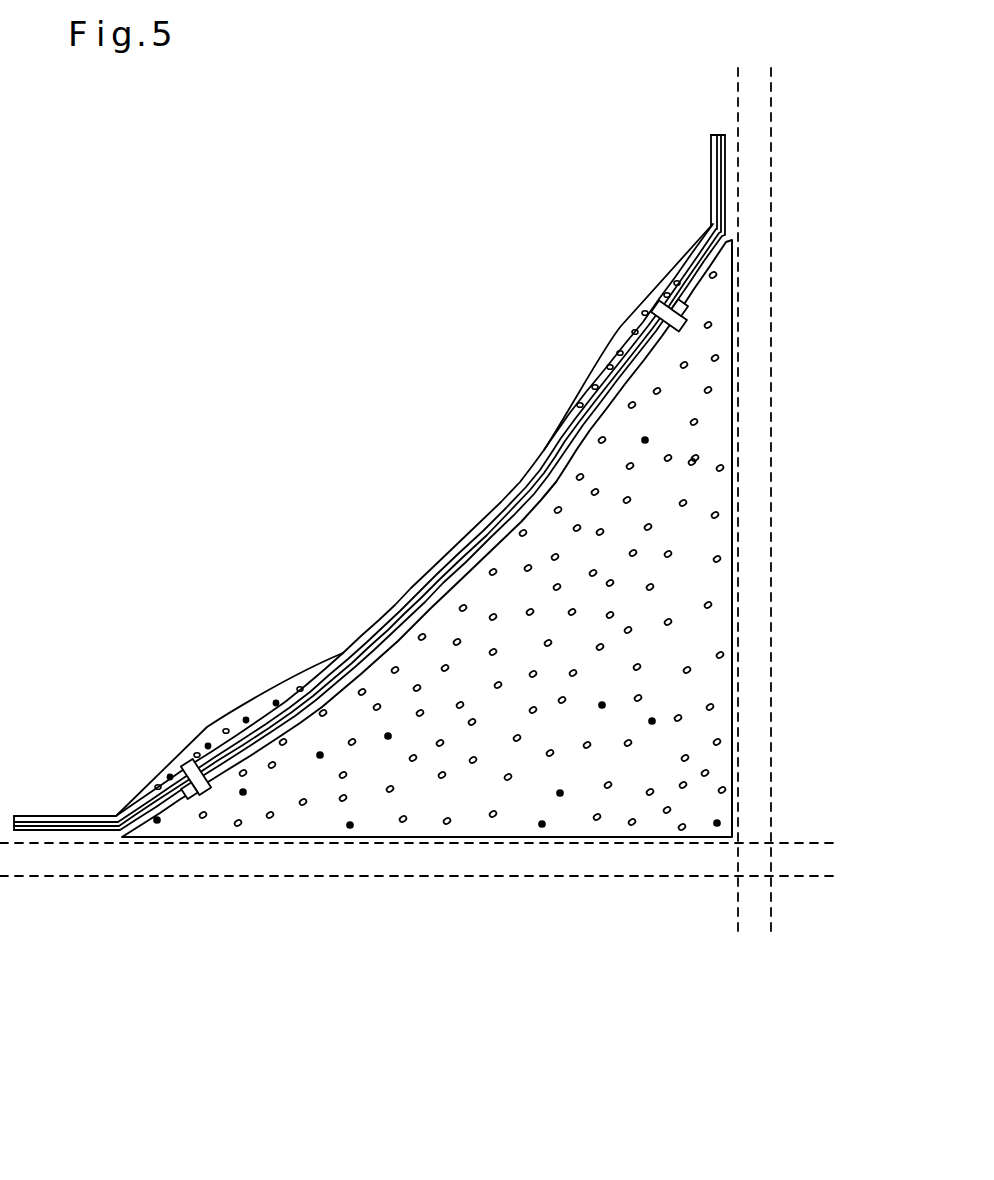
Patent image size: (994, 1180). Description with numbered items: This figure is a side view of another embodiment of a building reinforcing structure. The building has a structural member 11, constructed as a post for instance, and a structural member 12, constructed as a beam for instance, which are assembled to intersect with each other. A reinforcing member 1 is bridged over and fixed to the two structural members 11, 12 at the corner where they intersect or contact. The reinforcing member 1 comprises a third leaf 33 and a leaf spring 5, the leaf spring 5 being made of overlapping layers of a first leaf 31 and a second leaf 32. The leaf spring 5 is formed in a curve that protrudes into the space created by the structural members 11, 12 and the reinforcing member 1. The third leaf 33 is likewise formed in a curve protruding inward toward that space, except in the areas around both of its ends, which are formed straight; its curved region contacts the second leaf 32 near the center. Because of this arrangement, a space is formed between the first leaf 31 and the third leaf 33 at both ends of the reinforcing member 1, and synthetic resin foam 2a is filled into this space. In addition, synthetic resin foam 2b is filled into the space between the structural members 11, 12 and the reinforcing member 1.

The reinforcing member 1 is at (385, 365).
The synthetic resin foam 2a is at (625, 340).
The synthetic resin foam 2b is at (698, 380).
The leaf spring 5 is at (826, 437).
The structural member 11 is at (757, 120).
The structural member 12 is at (54, 862).
The first leaf 31 is at (540, 468).
The second leaf 32 is at (588, 432).
The third leaf 33 is at (566, 411).